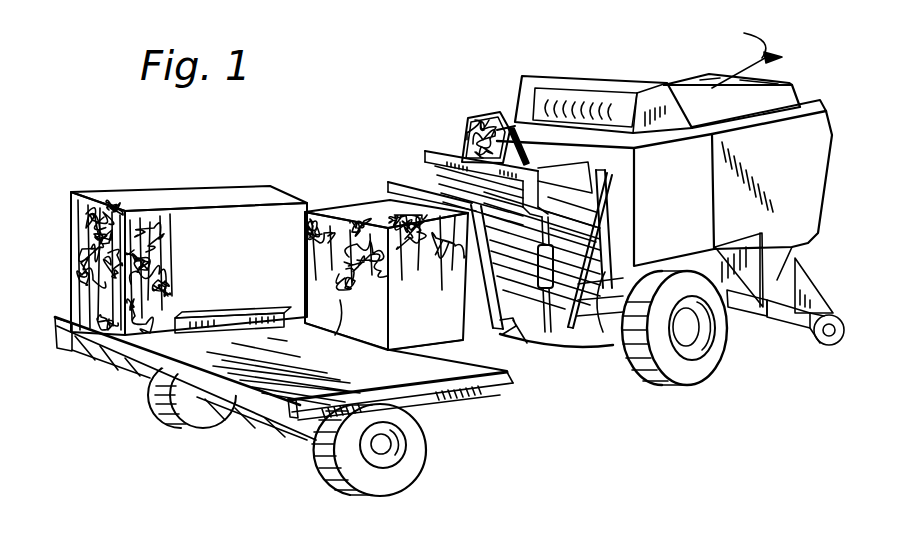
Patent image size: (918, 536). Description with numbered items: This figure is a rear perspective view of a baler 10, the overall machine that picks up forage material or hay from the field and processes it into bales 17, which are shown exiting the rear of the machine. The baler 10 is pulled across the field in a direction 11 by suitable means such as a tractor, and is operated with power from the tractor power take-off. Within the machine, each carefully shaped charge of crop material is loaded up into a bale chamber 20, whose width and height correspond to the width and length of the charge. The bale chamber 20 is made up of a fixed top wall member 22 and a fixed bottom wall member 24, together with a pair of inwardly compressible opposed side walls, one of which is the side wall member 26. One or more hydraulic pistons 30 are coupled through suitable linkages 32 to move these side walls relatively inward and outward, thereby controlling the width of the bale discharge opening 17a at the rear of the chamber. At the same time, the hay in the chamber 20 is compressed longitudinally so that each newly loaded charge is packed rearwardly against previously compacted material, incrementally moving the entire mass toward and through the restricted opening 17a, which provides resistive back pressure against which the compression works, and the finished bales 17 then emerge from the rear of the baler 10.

The baler 10 is at (500, 96).
The direction 11 is at (746, 57).
The bales 17 is at (343, 197).
The bale discharge opening 17a is at (486, 284).
The bale chamber 20 is at (490, 113).
The top wall member 22 is at (466, 133).
The bottom wall member 24 is at (508, 326).
The side wall member 26 is at (532, 340).
The hydraulic piston 30 is at (590, 196).
The linkage 32 is at (585, 166).